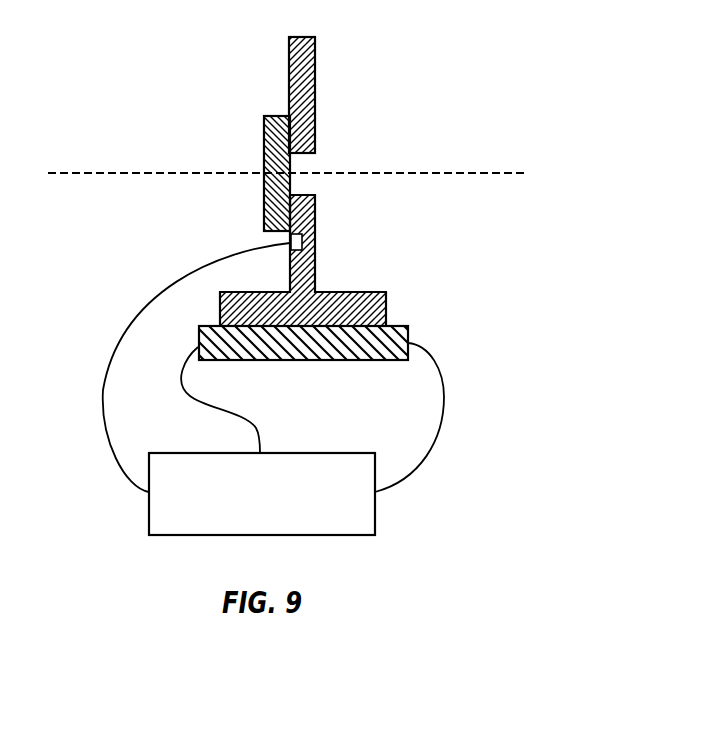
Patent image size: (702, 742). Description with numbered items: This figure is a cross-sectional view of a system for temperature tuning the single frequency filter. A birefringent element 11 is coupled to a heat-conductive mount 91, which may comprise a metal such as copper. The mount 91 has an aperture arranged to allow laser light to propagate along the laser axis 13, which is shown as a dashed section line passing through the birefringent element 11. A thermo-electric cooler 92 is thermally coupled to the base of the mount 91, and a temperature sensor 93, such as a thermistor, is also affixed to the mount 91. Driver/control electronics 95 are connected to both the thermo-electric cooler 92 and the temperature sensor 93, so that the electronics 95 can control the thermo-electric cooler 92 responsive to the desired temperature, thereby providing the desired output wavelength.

The birefringent element 11 is at (264, 140).
The laser axis 13 is at (97, 173).
The heat-conductive mount 91 is at (317, 62).
The thermo-electric cooler 92 is at (199, 331).
The temperature sensor 93 is at (291, 240).
The driver/control electronics 95 is at (149, 518).